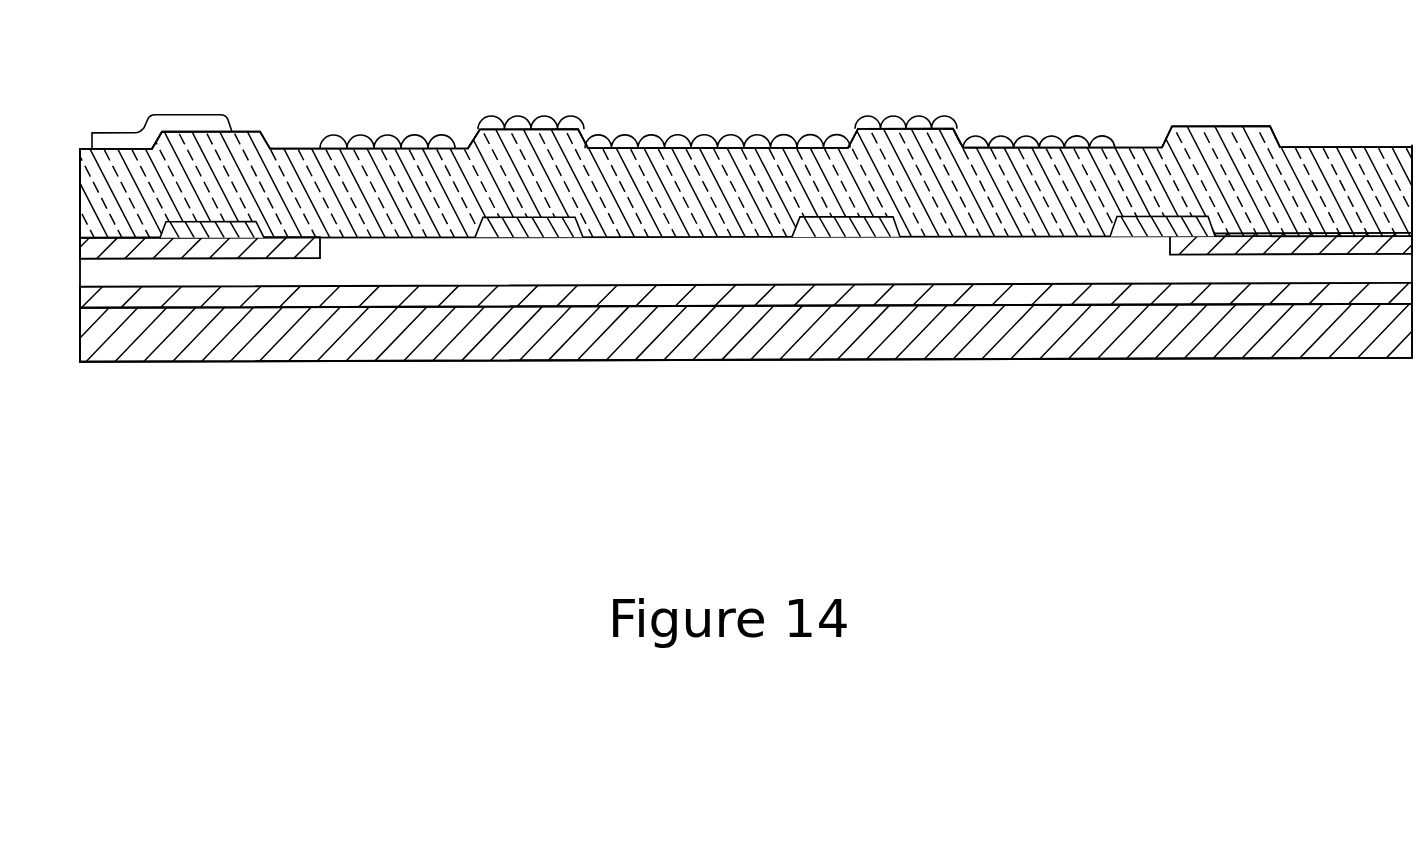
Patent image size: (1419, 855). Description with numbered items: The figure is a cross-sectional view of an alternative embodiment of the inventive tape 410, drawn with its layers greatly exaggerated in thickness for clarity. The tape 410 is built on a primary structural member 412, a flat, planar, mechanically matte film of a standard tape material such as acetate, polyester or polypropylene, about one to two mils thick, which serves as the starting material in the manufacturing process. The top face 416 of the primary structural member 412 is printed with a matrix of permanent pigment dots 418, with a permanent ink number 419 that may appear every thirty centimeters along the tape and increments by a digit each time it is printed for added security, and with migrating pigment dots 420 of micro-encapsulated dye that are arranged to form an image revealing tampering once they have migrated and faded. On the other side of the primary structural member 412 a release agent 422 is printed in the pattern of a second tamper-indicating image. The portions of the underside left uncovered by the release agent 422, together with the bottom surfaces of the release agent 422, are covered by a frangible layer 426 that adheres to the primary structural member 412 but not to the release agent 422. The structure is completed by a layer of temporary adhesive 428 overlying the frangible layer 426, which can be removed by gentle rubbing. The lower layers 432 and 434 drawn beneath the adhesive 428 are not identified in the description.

The tape 410 is at (490, 398).
The primary structural member 412 is at (1325, 167).
The top face 416 is at (287, 149).
The permanent pigment dots 418 is at (753, 136).
The permanent ink number 419 is at (172, 115).
The migrating pigment dots 420 is at (940, 118).
The release agent 422 is at (820, 232).
The frangible layer 426 is at (1205, 245).
The adhesive 428 is at (423, 257).
The substrate 432 is at (703, 342).
The insulating layer 434 is at (533, 295).